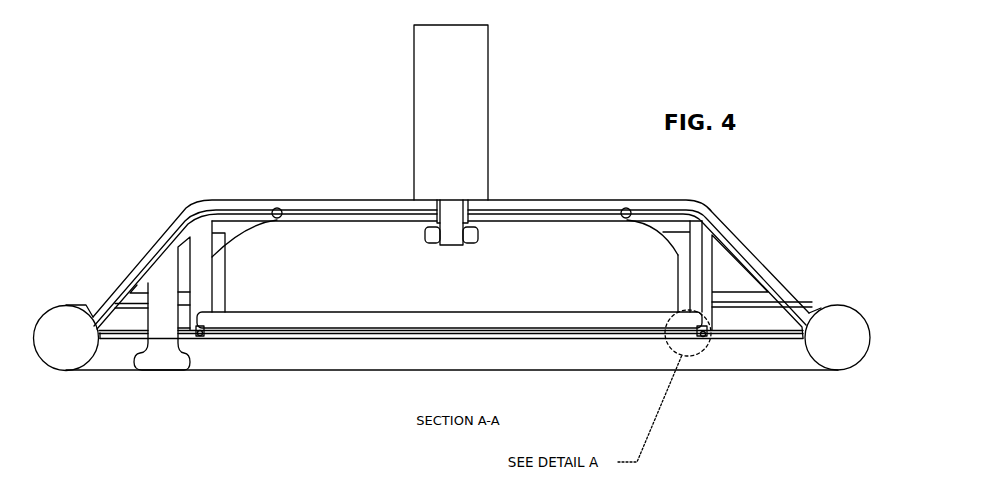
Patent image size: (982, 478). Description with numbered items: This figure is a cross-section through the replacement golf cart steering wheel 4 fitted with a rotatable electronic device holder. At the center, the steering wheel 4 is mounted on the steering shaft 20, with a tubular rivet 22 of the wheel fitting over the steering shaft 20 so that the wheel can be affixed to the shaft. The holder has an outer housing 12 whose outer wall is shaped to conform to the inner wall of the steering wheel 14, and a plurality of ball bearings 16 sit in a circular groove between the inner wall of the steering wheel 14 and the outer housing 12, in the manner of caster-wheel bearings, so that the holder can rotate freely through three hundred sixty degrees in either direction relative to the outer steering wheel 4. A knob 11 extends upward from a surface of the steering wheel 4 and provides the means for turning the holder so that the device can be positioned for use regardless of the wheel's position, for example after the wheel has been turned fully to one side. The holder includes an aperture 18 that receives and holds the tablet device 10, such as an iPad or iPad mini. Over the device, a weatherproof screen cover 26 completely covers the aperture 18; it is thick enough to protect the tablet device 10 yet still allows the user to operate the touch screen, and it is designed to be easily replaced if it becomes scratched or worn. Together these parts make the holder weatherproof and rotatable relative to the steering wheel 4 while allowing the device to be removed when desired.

The steering wheel 4 is at (845, 340).
The tablet device 10 is at (308, 327).
The knob 11 is at (148, 365).
The outer housing 12 is at (733, 275).
The inner wall of the steering wheel 14 is at (775, 297).
The ball bearings 16 is at (277, 207).
The aperture 18 is at (198, 338).
The steering shaft 20 is at (483, 65).
The tubular rivet 22 is at (480, 227).
The screen cover 26 is at (377, 340).